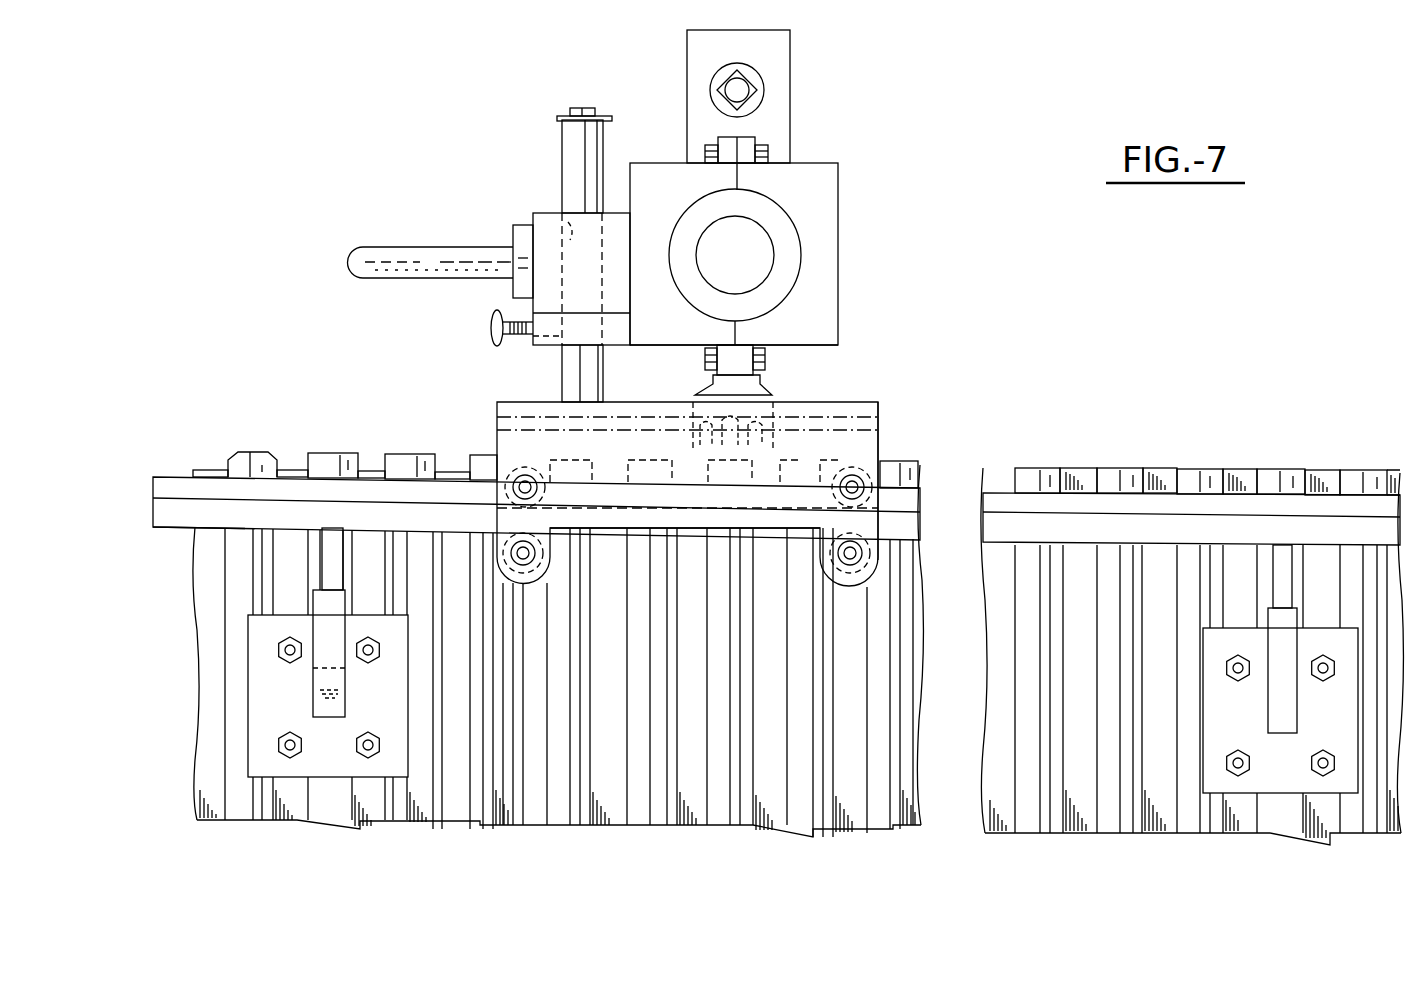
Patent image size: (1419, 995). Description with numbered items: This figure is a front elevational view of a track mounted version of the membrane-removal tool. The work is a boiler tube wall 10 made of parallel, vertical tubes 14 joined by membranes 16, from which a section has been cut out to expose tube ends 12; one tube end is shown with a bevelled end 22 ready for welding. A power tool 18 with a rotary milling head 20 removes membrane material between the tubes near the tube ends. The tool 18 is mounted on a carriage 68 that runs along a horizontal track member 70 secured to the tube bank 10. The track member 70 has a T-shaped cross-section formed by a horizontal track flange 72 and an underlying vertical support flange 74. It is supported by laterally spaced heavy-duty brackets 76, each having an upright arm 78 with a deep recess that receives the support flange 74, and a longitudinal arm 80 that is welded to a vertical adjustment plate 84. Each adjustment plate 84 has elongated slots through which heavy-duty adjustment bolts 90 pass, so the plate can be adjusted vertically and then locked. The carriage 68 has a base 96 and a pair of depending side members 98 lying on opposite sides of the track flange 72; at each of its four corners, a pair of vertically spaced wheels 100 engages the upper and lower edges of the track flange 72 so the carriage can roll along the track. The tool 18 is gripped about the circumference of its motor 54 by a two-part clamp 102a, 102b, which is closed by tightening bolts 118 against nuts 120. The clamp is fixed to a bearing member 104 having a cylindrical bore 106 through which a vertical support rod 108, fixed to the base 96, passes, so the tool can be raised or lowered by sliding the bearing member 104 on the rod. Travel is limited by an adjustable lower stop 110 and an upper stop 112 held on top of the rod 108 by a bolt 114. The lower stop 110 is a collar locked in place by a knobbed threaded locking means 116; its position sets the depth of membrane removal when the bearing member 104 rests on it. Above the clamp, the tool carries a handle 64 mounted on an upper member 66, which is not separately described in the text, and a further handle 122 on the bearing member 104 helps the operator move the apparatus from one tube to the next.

The boiler tube wall 10 is at (1280, 466).
The tube ends 12 is at (268, 452).
The tubes 14 is at (407, 823).
The membrane 16 is at (300, 475).
The power tool 18 is at (634, 160).
The rotary milling head 20 is at (770, 396).
The bevelled end 22 is at (238, 455).
The motor 54 is at (765, 263).
The handle 64 is at (768, 82).
The upper bracket 66 is at (793, 115).
The carriage 68 is at (884, 432).
The track member 70 is at (181, 476).
The track flange 72 is at (187, 523).
The support flange 74 is at (323, 571).
The brackets 76 is at (308, 668).
The upright arm 78 is at (315, 633).
The longitudinal arm 80 is at (322, 690).
The vertical adjustment plate 84 is at (253, 717).
The adjustment bolt 90 is at (287, 745).
The base 96 is at (878, 408).
The side members 98 is at (615, 518).
The wheels 100 is at (497, 425).
The clamp part 102a is at (690, 346).
The clamp part 102b is at (838, 228).
The bearing member 104 is at (540, 214).
The cylindrical bore 106 is at (572, 210).
The vertical support rod 108 is at (563, 135).
The adjustable lower stop 110 is at (543, 346).
The upper stop 112 is at (578, 118).
The bolt 114 is at (575, 115).
The threaded locking means 116 is at (490, 328).
The bolts 118 is at (703, 152).
The nuts 120 is at (768, 140).
The handle 122 is at (410, 248).